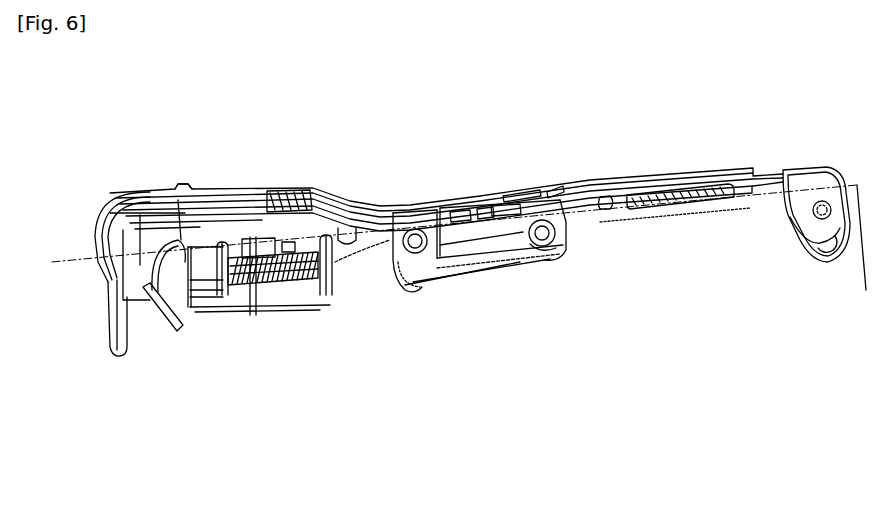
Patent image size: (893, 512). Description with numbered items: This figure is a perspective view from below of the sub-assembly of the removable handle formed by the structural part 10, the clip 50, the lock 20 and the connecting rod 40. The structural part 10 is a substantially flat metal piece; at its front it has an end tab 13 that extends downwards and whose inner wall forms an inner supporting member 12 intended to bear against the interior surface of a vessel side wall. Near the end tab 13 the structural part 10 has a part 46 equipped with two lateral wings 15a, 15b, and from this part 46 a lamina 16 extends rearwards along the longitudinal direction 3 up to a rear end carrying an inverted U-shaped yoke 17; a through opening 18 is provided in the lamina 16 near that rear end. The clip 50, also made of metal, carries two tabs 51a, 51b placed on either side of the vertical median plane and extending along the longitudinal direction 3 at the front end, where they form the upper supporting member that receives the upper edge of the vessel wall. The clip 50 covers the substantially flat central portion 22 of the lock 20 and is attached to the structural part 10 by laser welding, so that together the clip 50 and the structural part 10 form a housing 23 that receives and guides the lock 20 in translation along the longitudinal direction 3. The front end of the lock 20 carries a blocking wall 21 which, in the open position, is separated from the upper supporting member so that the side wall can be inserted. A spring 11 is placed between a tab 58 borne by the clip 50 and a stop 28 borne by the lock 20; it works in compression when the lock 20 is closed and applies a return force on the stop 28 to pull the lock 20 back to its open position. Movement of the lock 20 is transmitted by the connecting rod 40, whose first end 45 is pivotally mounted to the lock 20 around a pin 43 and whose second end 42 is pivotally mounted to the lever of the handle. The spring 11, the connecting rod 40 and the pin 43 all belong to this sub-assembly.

The longitudinal direction 3 is at (459, 256).
The structural part 10 is at (390, 205).
The spring 11 is at (268, 272).
The inner supporting member 12 is at (120, 300).
The end tab 13 is at (103, 298).
The lateral wing 15a is at (278, 193).
The lateral wing 15b is at (208, 282).
The lamina 16 is at (627, 207).
The inverted U-shaped yoke 17 is at (815, 186).
The through opening 18 is at (592, 205).
The lock 20 is at (338, 230).
The blocking wall 21 is at (155, 270).
The central portion 22 is at (178, 200).
The housing 23 is at (290, 238).
The stop 28 is at (322, 247).
The connecting rod 40 is at (487, 247).
The second end 42 is at (523, 247).
The pin 43 is at (417, 250).
The first end 45 is at (440, 273).
The part 46 is at (232, 227).
The clip 50 is at (258, 272).
The tab 51a is at (177, 238).
The tab 51b is at (185, 262).
The tab 58 is at (225, 278).